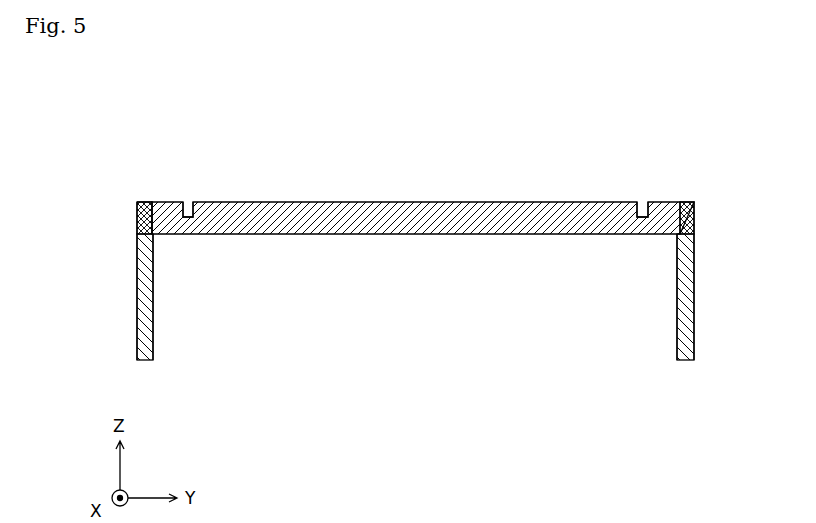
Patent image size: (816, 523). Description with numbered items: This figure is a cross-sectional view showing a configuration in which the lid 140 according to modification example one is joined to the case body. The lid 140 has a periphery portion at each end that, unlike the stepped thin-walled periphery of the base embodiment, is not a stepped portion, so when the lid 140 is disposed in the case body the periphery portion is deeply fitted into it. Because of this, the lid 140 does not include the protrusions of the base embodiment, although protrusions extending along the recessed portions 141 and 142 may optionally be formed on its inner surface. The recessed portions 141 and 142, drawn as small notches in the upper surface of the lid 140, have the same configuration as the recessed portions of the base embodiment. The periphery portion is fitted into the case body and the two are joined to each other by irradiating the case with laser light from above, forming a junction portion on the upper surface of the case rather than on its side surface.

The lid 140 is at (412, 184).
The recessed portion 141 is at (643, 202).
The recessed portion 142 is at (189, 202).